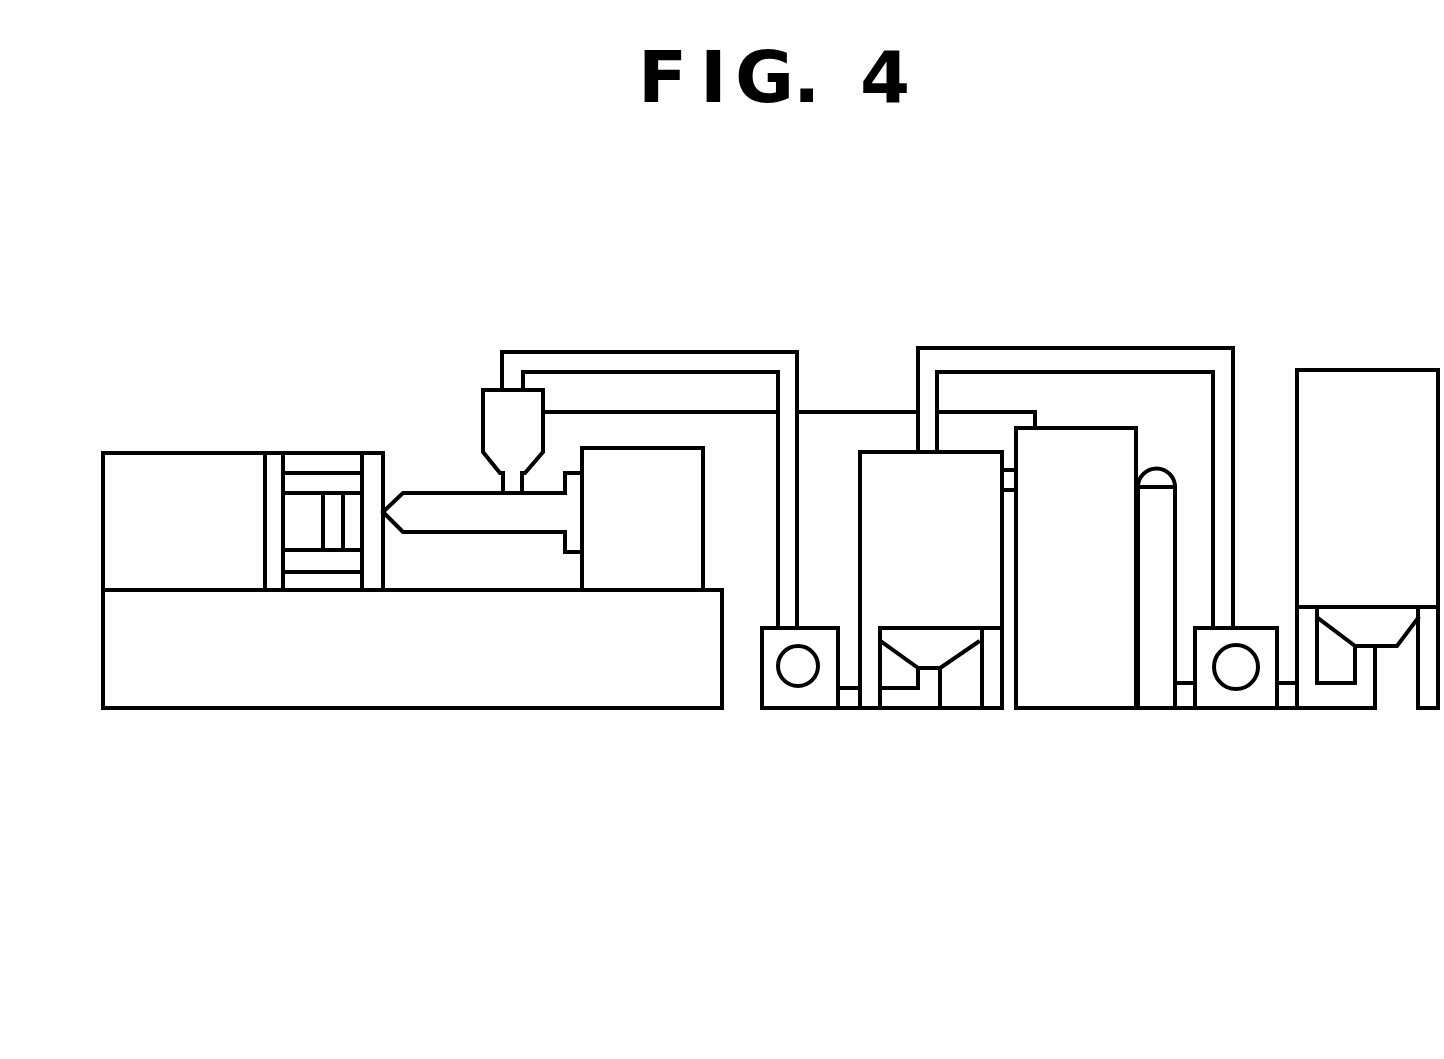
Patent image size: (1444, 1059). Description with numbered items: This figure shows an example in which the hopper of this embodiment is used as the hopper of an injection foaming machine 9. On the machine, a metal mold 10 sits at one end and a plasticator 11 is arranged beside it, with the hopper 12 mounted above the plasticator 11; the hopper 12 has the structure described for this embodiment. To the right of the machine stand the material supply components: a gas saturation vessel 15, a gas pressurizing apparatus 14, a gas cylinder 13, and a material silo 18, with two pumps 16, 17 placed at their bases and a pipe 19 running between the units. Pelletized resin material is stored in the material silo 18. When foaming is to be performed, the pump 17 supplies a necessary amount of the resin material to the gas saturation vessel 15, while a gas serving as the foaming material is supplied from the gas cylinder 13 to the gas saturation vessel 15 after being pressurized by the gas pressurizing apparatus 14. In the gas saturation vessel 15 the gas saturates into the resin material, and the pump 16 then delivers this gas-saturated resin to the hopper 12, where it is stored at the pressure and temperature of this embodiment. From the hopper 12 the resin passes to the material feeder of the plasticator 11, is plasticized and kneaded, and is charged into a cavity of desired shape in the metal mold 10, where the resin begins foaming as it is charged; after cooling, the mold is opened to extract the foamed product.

The injection foaming machine 9 is at (337, 658).
The metal mold 10 is at (303, 523).
The plasticator 11 is at (452, 505).
The hopper 12 is at (527, 415).
The gas cylinder 13 is at (1160, 505).
The gas pressurizing apparatus 14 is at (1068, 465).
The gas saturation vessel 15 is at (892, 487).
The pump 16 is at (793, 670).
The pump 17 is at (1228, 672).
The material silo 18 is at (1368, 425).
The pipe 19 is at (683, 412).